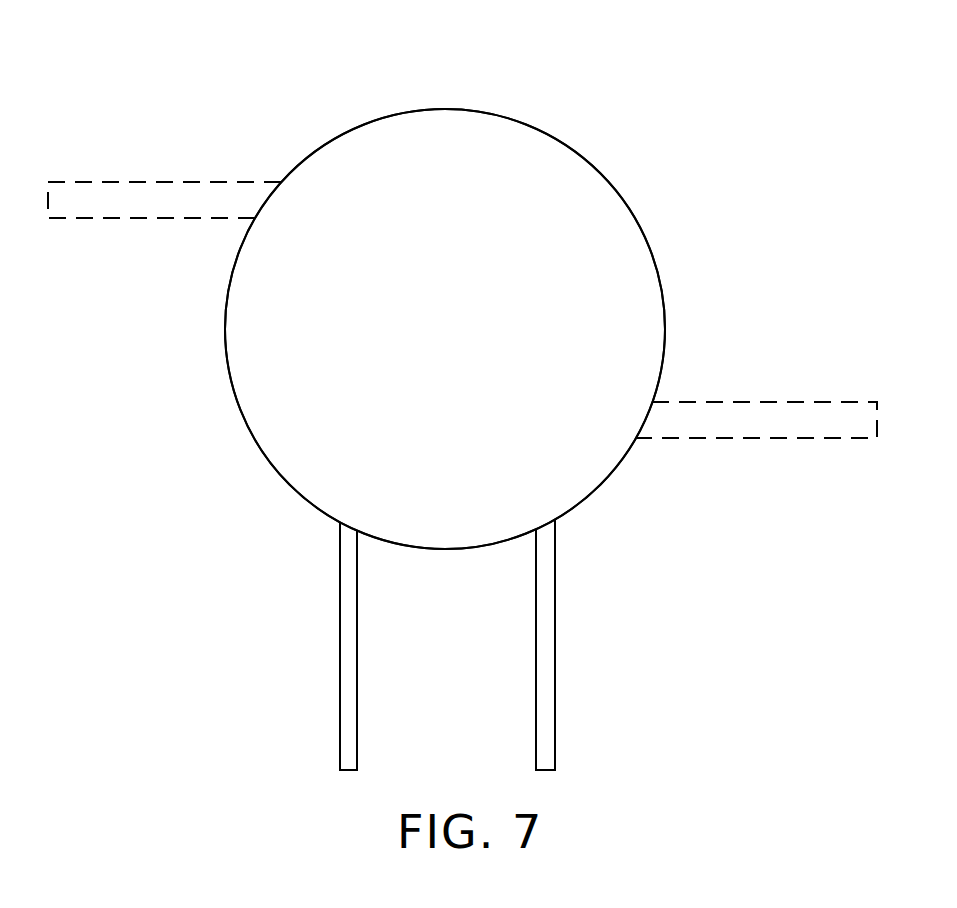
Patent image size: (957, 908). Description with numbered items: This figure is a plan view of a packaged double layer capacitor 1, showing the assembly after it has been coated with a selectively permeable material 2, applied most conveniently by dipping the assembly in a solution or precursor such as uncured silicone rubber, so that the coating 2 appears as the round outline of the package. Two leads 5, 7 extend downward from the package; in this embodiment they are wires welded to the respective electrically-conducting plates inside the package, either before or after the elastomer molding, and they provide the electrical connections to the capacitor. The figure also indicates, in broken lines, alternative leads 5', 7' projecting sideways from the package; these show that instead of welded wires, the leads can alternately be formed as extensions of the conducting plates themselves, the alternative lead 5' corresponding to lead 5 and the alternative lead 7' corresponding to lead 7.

The LED assembly 1 is at (505, 73).
The selectively permeable material 2 is at (416, 421).
The lead 5 is at (586, 645).
The lead 7 is at (308, 646).
The alternative lead 5' is at (756, 377).
The alternative lead 7' is at (164, 158).